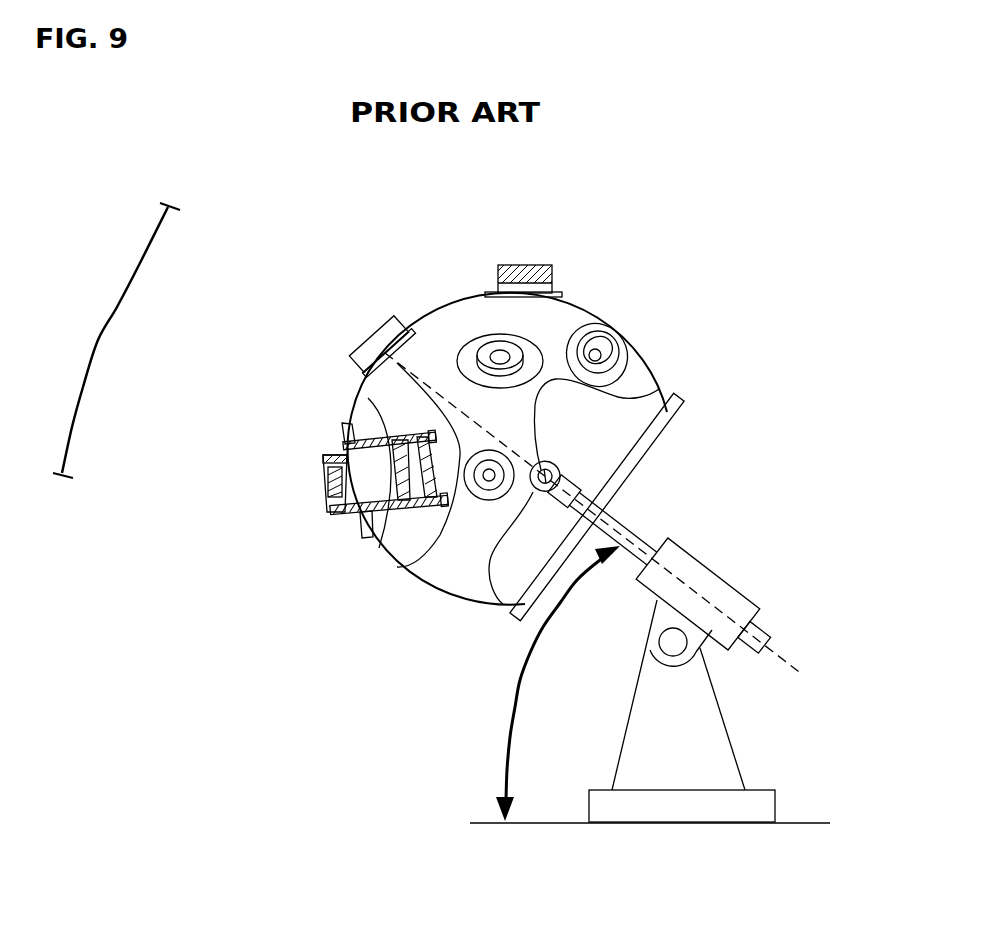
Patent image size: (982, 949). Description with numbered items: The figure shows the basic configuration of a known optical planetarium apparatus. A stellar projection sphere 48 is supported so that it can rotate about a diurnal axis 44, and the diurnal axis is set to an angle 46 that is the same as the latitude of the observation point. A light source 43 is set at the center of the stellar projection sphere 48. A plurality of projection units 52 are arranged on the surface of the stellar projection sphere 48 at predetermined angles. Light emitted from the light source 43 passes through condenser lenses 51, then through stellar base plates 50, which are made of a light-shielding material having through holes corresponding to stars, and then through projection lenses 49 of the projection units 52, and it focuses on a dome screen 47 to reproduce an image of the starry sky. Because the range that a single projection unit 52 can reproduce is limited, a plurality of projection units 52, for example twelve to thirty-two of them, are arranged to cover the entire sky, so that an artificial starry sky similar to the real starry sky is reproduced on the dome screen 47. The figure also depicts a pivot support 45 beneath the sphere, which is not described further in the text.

The light source 43 is at (562, 470).
The diurnal axis 44 is at (374, 348).
The pivot support 45 is at (658, 638).
The angle 46 is at (513, 688).
The dome screen 47 is at (108, 308).
The stellar projection sphere 48 is at (455, 332).
The projection lens 49 is at (330, 477).
The stellar base plate 50 is at (346, 430).
The condenser lens 51 is at (368, 398).
The projection unit 52 is at (393, 567).